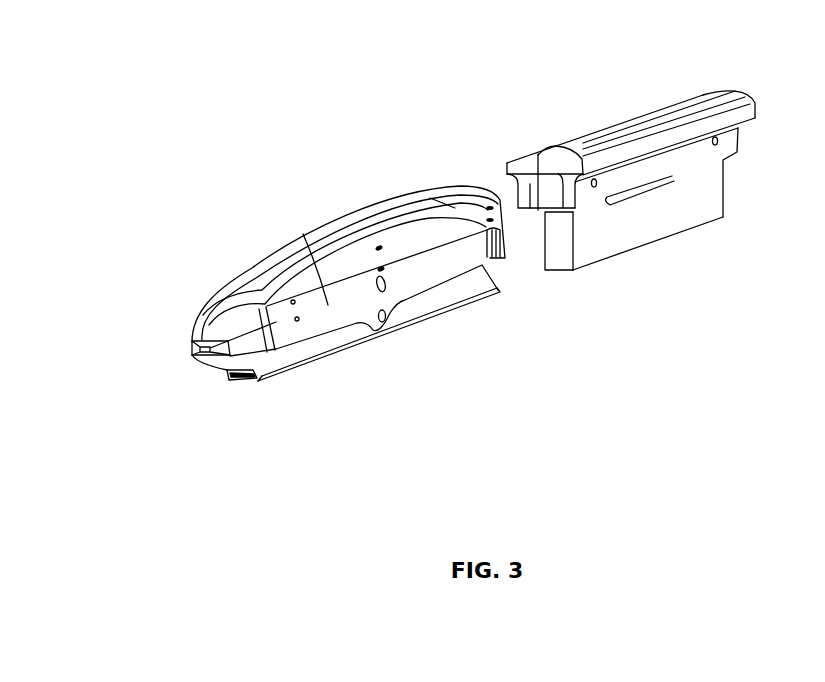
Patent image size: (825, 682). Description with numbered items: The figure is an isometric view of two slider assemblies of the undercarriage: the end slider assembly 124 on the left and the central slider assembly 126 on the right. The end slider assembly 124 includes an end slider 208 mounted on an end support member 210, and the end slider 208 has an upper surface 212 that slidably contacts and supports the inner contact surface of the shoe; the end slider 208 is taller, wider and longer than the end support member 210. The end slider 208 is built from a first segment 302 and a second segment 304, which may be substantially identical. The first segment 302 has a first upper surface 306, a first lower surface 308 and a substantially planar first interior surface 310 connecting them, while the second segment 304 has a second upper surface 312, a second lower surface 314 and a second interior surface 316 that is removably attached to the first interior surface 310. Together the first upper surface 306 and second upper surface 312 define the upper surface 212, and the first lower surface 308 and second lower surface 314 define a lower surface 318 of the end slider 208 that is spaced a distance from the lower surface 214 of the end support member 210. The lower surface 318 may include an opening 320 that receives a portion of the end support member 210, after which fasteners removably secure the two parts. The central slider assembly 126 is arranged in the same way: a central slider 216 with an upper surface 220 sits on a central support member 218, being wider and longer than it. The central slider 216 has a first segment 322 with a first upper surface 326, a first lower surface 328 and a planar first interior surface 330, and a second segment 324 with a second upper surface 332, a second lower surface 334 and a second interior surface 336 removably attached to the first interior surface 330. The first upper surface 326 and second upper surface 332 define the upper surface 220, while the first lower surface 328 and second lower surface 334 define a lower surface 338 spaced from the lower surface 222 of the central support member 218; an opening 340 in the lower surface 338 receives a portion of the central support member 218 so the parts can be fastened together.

The end slider assembly 124 is at (232, 112).
The central slider assembly 126 is at (531, 44).
The end slider 208 is at (268, 252).
The end support member 210 is at (236, 385).
The upper surface 212 is at (355, 206).
The lower surface 214 is at (426, 325).
The central slider 216 is at (526, 156).
The central support member 218 is at (603, 258).
The upper surface 220 is at (645, 110).
The lower surface 222 is at (672, 240).
The first segment 302 is at (205, 318).
The second segment 304 is at (395, 252).
The first upper surface 306 is at (303, 233).
The first lower surface 308 is at (205, 366).
The first interior surface 310 is at (248, 262).
The second upper surface 312 is at (412, 207).
The second lower surface 314 is at (258, 380).
The second interior surface 316 is at (299, 321).
The lower surface 318 is at (503, 259).
The opening 320 is at (328, 342).
The first segment 322 is at (505, 160).
The second segment 324 is at (686, 166).
The first upper surface 326 is at (560, 147).
The first lower surface 328 is at (537, 210).
The first interior surface 330 is at (613, 127).
The second upper surface 332 is at (719, 96).
The second lower surface 334 is at (568, 215).
The second interior surface 336 is at (668, 103).
The lower surface 338 is at (733, 154).
The opening 340 is at (612, 200).